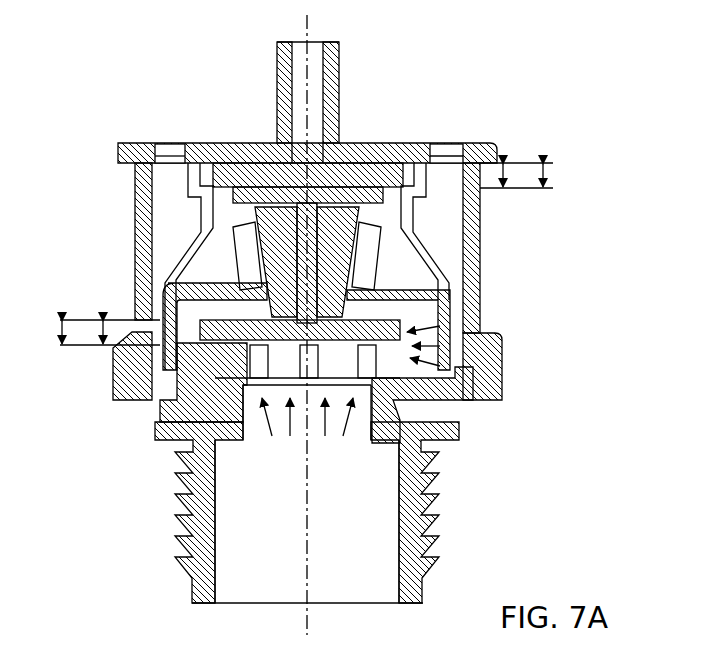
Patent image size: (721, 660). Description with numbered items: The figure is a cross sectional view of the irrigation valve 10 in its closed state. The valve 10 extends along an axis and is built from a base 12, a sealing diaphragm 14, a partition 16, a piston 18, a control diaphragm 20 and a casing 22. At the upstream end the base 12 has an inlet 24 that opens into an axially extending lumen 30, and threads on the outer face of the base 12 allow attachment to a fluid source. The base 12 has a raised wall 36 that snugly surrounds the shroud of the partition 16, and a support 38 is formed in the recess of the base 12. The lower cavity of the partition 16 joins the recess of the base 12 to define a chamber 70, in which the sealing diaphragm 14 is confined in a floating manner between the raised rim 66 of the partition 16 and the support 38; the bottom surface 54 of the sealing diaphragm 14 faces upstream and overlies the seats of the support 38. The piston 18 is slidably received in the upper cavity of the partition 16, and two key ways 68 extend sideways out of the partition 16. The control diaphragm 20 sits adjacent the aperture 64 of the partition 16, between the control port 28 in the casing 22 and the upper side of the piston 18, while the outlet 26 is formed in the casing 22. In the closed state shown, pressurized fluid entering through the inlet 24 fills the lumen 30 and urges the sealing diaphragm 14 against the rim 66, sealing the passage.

The irrigation valve 10 is at (549, 78).
The base 12 is at (157, 517).
The sealing diaphragm 14 is at (430, 300).
The partition 16 is at (162, 267).
The piston 18 is at (410, 222).
The control diaphragm 20 is at (352, 178).
The casing 22 is at (135, 190).
The inlet 24 is at (372, 606).
The outlet 26 is at (172, 131).
The control port 28 is at (339, 70).
The lumen 30 is at (216, 552).
The raised wall 36 is at (113, 367).
The support 38 is at (473, 390).
The bottom surface 54 is at (215, 400).
The aperture 64 is at (165, 300).
The raised rim 66 is at (420, 288).
The key ways 68 is at (231, 267).
The chamber 70 is at (497, 338).